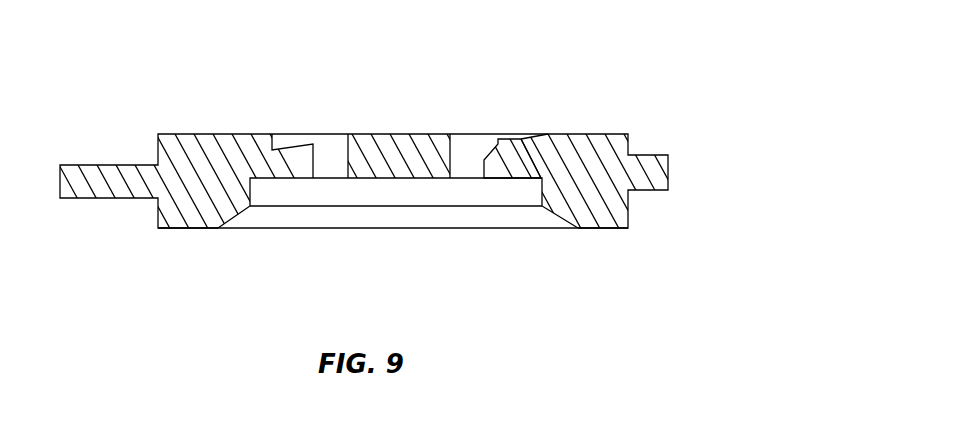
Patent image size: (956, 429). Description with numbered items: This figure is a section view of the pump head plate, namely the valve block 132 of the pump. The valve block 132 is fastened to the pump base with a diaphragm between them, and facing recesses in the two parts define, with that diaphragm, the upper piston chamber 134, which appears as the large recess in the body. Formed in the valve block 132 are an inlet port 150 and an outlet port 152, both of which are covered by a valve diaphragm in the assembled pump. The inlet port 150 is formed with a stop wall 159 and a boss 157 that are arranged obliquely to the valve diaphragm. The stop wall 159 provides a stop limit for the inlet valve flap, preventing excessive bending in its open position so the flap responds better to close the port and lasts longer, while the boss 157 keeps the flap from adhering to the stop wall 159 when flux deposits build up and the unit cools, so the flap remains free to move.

The valve block 132 is at (686, 114).
The upper piston chamber 134 is at (423, 250).
The inlet port 150 is at (474, 113).
The outlet port 152 is at (313, 114).
The boss 157 is at (509, 138).
The stop wall 159 is at (537, 135).